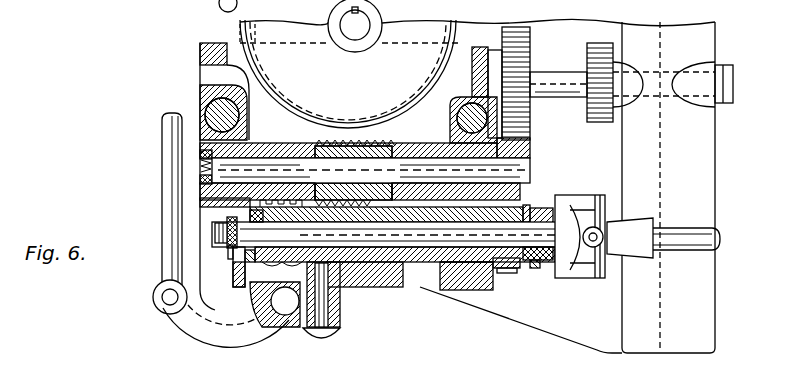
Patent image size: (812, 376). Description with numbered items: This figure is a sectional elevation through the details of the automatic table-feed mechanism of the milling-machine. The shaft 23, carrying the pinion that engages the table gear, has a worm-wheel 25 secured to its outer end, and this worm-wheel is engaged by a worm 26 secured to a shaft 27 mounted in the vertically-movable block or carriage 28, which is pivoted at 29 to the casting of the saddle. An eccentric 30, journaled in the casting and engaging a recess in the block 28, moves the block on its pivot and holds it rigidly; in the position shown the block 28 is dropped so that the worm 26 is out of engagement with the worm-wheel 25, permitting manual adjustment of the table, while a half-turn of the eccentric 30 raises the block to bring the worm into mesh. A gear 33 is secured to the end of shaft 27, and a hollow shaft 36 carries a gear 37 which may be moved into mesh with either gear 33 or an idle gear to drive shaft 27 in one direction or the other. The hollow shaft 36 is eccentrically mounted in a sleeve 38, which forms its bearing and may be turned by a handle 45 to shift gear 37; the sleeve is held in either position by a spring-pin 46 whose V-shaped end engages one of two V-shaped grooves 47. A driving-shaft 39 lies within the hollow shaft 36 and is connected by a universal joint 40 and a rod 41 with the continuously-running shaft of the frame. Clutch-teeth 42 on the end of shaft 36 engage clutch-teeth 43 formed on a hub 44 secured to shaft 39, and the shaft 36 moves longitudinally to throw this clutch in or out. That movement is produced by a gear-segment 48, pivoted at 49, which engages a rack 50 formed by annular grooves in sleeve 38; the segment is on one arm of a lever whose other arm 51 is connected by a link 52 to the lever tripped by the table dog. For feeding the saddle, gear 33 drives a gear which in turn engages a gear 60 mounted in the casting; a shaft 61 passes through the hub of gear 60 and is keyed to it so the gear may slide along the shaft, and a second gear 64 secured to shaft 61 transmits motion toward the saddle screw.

The shaft 23 is at (348, 30).
The worm-wheel 25 is at (443, 42).
The worm 26 is at (392, 142).
The shaft 27 is at (518, 171).
The block or carriage 28 is at (453, 280).
The pivot 29 is at (445, 110).
The eccentric 30 is at (213, 112).
The gear 33 is at (525, 148).
The hollow shaft 36 is at (502, 270).
The gear 37 is at (512, 273).
The sleeve 38 is at (478, 275).
The driving-shaft 39 is at (531, 259).
The universal joint 40 is at (606, 213).
The rod 41 is at (672, 233).
The clutch-teeth 42 is at (529, 206).
The clutch-teeth 43 is at (537, 213).
The hub 44 is at (558, 216).
The handle 45 is at (413, 272).
The spring-pin 46 is at (337, 302).
The V-shaped grooves 47 is at (340, 210).
The gear-segment 48 is at (292, 266).
The pivot 49 is at (290, 320).
The rack 50 is at (386, 208).
The arm 51 is at (210, 333).
The link 52 is at (163, 196).
The gear 60 is at (518, 62).
The shaft 61 is at (577, 88).
The second gear 64 is at (598, 44).